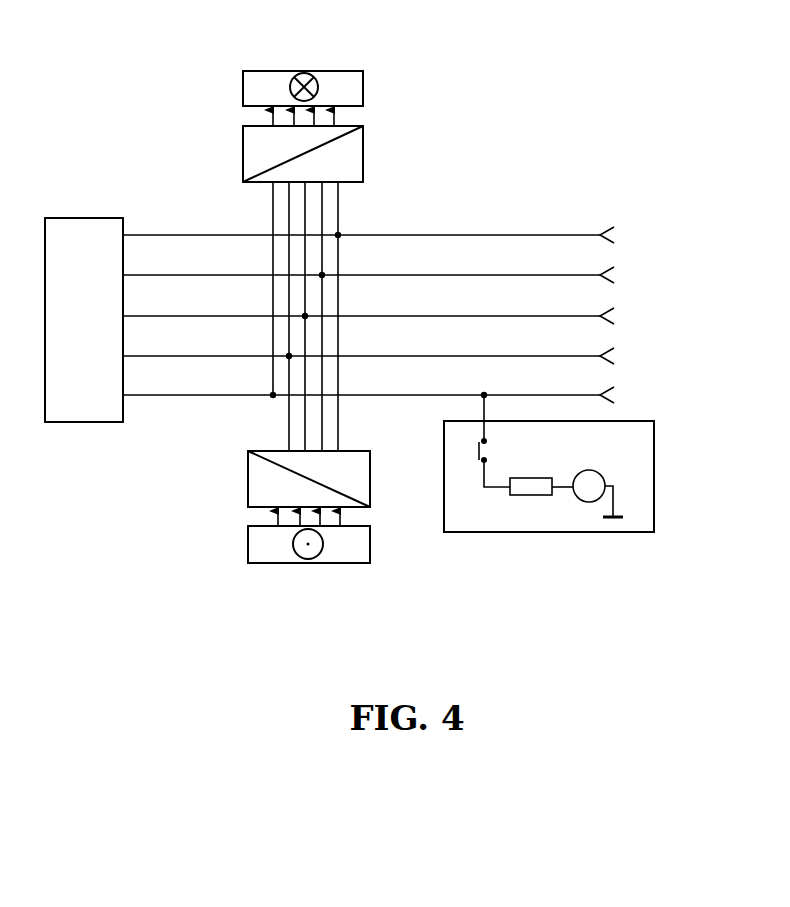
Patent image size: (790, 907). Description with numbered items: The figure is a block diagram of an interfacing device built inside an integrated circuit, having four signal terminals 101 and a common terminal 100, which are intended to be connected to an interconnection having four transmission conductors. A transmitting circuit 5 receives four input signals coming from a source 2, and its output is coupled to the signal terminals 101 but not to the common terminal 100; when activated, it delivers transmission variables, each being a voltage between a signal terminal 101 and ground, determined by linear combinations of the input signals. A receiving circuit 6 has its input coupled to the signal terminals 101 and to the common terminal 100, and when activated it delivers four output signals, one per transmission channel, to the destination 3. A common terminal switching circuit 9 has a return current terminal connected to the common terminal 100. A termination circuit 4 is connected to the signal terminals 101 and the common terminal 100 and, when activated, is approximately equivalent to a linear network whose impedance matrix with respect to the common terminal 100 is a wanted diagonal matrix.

The source 2 is at (228, 545).
The destination 3 is at (305, 60).
The termination circuit 4 is at (72, 207).
The transmitting circuit 5 is at (228, 478).
The receiving circuit 6 is at (367, 155).
The common terminal switching circuit 9 is at (665, 472).
The common terminal 100 is at (623, 385).
The signal terminals 101 is at (623, 223).